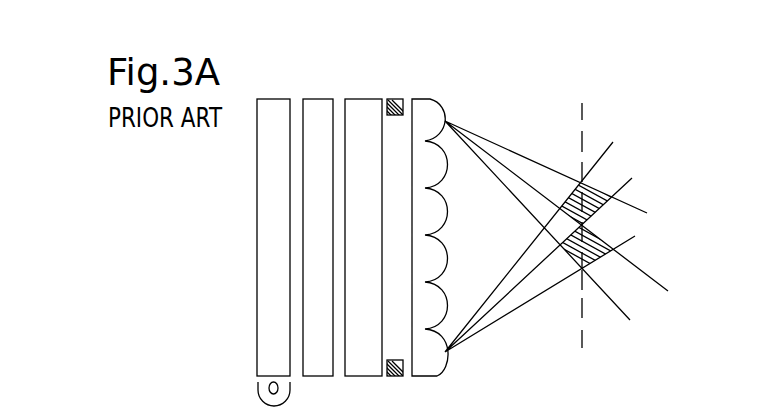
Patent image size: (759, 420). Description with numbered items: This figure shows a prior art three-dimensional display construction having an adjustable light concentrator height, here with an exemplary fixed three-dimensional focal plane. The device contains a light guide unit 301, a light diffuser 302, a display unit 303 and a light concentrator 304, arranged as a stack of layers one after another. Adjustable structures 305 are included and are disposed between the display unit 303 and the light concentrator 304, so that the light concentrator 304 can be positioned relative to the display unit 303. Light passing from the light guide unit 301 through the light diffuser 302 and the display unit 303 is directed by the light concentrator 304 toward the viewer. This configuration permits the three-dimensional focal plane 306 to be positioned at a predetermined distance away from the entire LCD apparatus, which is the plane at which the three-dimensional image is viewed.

The light guide unit 301 is at (257, 175).
The light diffuser 302 is at (314, 99).
The display unit 303 is at (355, 99).
The light concentrator 304 is at (425, 99).
The adjustable structures 305 is at (403, 377).
The 3D focal plane 306 is at (582, 352).